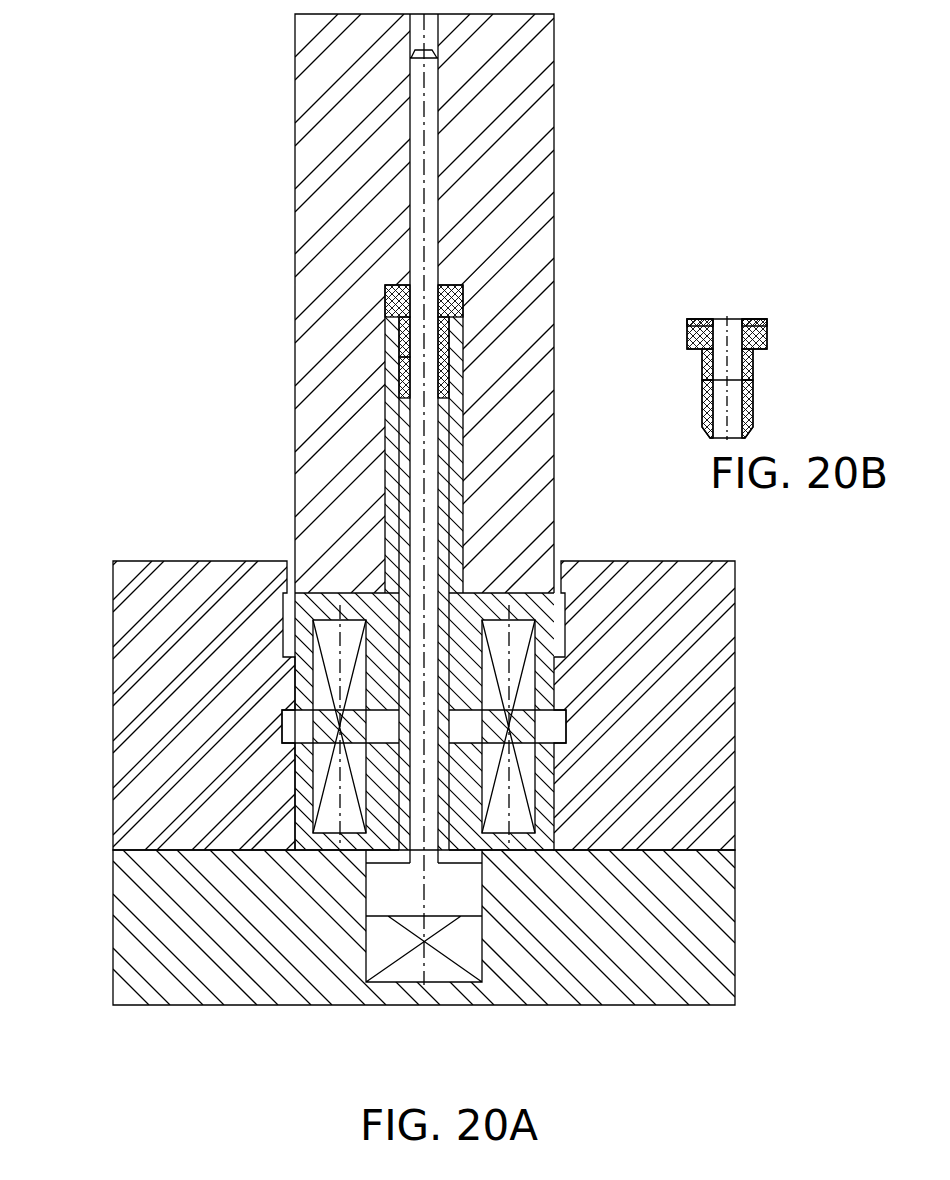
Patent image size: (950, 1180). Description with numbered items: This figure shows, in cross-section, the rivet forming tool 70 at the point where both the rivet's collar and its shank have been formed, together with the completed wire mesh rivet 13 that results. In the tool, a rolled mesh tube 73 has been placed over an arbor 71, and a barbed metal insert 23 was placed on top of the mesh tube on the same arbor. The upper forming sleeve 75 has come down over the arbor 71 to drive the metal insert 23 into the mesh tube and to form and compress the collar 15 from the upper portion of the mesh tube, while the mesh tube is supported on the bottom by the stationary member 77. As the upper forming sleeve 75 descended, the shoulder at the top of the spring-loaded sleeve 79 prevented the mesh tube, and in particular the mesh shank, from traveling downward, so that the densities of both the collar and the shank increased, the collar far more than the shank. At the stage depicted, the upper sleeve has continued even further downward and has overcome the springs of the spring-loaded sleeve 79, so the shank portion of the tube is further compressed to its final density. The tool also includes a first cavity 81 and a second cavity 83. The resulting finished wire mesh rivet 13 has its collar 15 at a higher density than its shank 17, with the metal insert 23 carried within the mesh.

In FIG. 20A, the rivet forming tool 70 is at (105, 437).
In FIG. 20A, the arbor of rivet forming tool 71 is at (428, 88).
In FIG. 20A, the upper forming sleeve of rivet forming tool 75 is at (537, 184).
In FIG. 20A, the stationary member of rivet forming tool 77 is at (440, 462).
In FIG. 20A, the spring-loaded sleeve of rivet forming tool 79 is at (475, 603).
In FIG. 20A, the rolled mesh tube 73 is at (424, 705).
In FIG. 20A, the second cavity of rivet forming tool 83 is at (385, 304).
In FIG. 20A, the first cavity of rivet forming tool 81 is at (400, 355).
In FIG. 20A, the barbed metal insert 23 is at (400, 330).
In FIG. 20B, the barbed metal insert 23 is at (753, 360).
In FIG. 20A, the collar of wire mesh rivet 15 is at (462, 297).
In FIG. 20B, the collar of wire mesh rivet 15 is at (753, 343).
In FIG. 20A, the shank of wire mesh rivet 17 is at (460, 356).
In FIG. 20B, the shank of wire mesh rivet 17 is at (752, 412).
In FIG. 20B, the wire mesh rivet 13 is at (726, 282).